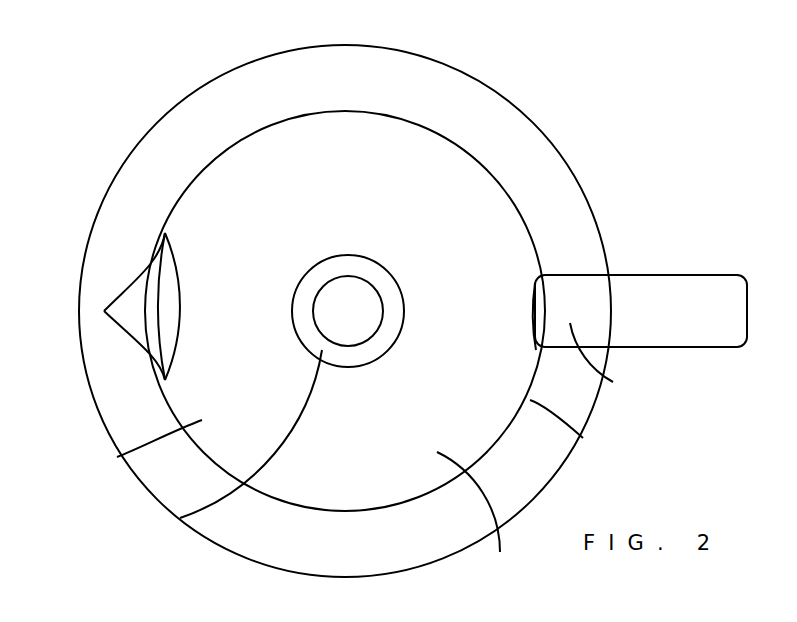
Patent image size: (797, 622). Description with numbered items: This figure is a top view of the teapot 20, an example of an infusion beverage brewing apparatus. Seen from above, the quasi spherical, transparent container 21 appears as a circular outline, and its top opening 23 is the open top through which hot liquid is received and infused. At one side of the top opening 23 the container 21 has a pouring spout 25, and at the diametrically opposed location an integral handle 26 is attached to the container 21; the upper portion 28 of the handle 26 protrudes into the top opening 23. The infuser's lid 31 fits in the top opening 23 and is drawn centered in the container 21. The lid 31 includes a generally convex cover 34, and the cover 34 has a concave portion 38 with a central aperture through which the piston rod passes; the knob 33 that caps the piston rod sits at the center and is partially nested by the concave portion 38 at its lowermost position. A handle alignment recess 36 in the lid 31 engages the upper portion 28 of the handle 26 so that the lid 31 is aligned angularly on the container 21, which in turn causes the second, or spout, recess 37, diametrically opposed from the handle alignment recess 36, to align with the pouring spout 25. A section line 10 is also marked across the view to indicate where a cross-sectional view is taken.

The section line 10 is at (542, 45).
The teapot 20 is at (141, 98).
The container 21 is at (607, 247).
The top opening 23 is at (583, 438).
The pouring spout 25 is at (115, 333).
The handle 26 is at (748, 311).
The upper portion 28 is at (613, 382).
The lid 31 is at (475, 515).
The knob 33 is at (345, 283).
The cover 34 is at (117, 457).
The handle alignment recess 36 is at (535, 283).
The spout recess 37 is at (172, 299).
The concave portion 38 is at (180, 518).